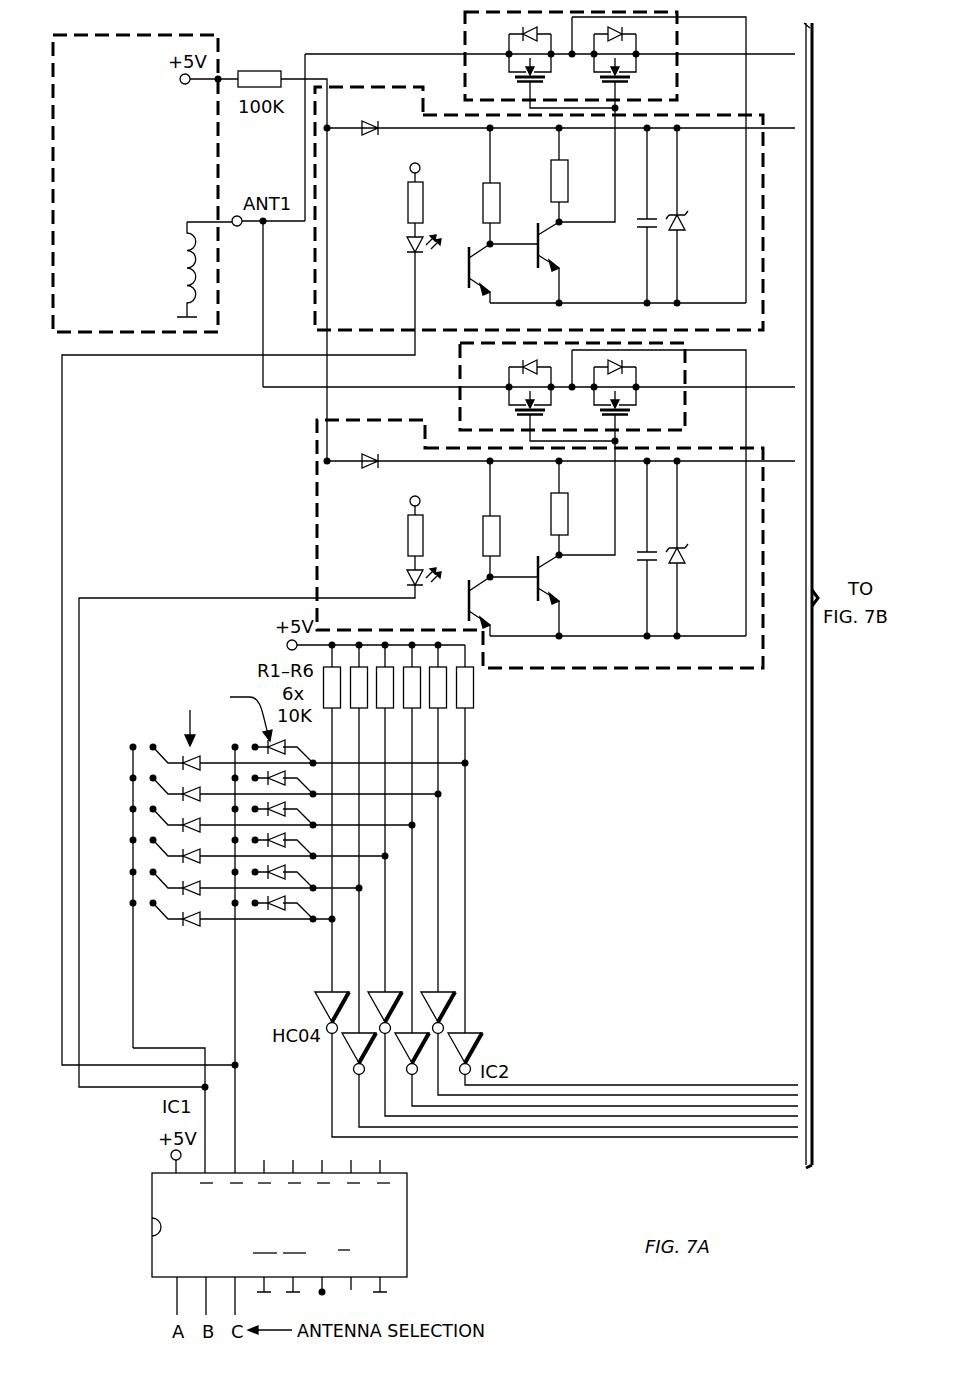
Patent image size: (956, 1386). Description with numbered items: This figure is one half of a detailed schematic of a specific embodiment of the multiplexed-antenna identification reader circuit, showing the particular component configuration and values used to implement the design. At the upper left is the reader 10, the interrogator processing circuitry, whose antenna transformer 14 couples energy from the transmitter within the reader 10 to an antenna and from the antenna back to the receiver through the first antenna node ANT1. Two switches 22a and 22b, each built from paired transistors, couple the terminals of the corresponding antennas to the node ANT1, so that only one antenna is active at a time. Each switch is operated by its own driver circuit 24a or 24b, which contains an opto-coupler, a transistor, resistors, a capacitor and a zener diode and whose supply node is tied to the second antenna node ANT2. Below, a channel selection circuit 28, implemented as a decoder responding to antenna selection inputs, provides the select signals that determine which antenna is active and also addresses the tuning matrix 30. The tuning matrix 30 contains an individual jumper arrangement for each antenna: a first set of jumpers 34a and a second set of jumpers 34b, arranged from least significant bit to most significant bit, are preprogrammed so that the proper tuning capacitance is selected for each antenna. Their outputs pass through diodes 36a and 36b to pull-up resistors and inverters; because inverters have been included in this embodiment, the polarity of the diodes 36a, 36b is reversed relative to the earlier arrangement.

The reader 10 is at (142, 183).
The antenna transformer 14 is at (193, 245).
The switch 22a is at (460, 365).
The switch 22b is at (465, 38).
The driver circuit 24a is at (380, 561).
The driver circuit 24b is at (397, 312).
The channel selection circuit 28 is at (407, 1228).
The tuning matrix 30 is at (244, 841).
The first set of jumpers 34a is at (143, 910).
The second set of jumpers 34b is at (248, 918).
The diodes 36a is at (189, 924).
The diodes 36b is at (272, 910).